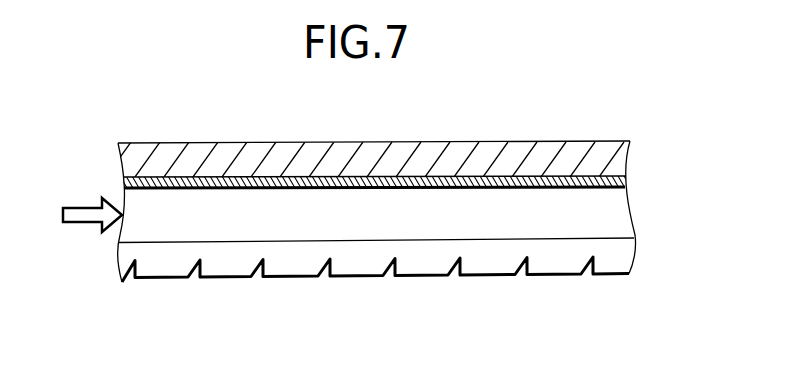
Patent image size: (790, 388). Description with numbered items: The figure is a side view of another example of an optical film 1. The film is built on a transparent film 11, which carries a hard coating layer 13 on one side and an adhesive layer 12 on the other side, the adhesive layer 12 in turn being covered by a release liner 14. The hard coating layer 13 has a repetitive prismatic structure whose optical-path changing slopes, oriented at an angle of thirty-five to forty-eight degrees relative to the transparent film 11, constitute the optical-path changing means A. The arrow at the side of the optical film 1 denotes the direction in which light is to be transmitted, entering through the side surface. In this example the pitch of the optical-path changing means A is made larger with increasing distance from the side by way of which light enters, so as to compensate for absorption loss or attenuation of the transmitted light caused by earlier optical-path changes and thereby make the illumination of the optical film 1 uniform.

The optical film 1 is at (112, 159).
The release liner 14 is at (607, 157).
The adhesive layer 12 is at (607, 178).
The transparent film 11 is at (610, 215).
The hard coating layer 13 is at (610, 250).
The optical-path changing means A is at (524, 287).